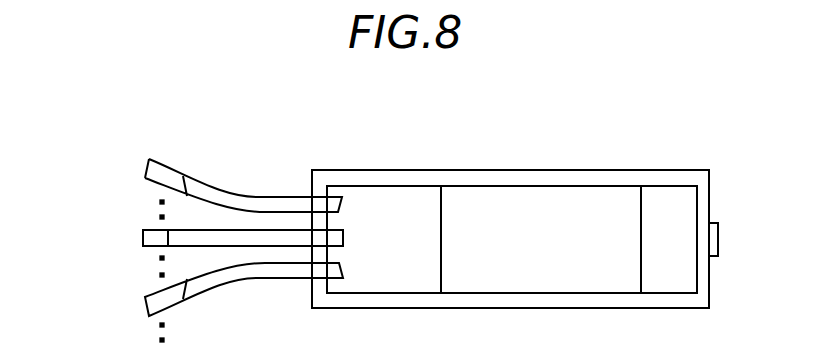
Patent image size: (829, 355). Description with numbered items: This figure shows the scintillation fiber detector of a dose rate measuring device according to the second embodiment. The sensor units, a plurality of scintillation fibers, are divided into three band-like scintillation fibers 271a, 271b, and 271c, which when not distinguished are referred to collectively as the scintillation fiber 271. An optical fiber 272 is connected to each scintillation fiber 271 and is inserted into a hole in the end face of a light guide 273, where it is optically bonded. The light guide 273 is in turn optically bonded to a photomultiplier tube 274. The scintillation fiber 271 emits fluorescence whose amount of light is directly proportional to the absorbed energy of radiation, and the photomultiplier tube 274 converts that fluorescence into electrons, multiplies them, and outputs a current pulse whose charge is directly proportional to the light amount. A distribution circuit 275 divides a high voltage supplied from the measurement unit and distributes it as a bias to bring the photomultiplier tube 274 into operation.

The scintillation fiber 271 is at (163, 160).
The optical fiber 272 is at (250, 197).
The light guide 273 is at (391, 202).
The photomultiplier tube 274 is at (523, 203).
The distribution circuit 275 is at (670, 198).
The scintillation fiber 271a is at (134, 157).
The scintillation fiber 271b is at (134, 228).
The scintillation fiber 271c is at (134, 295).